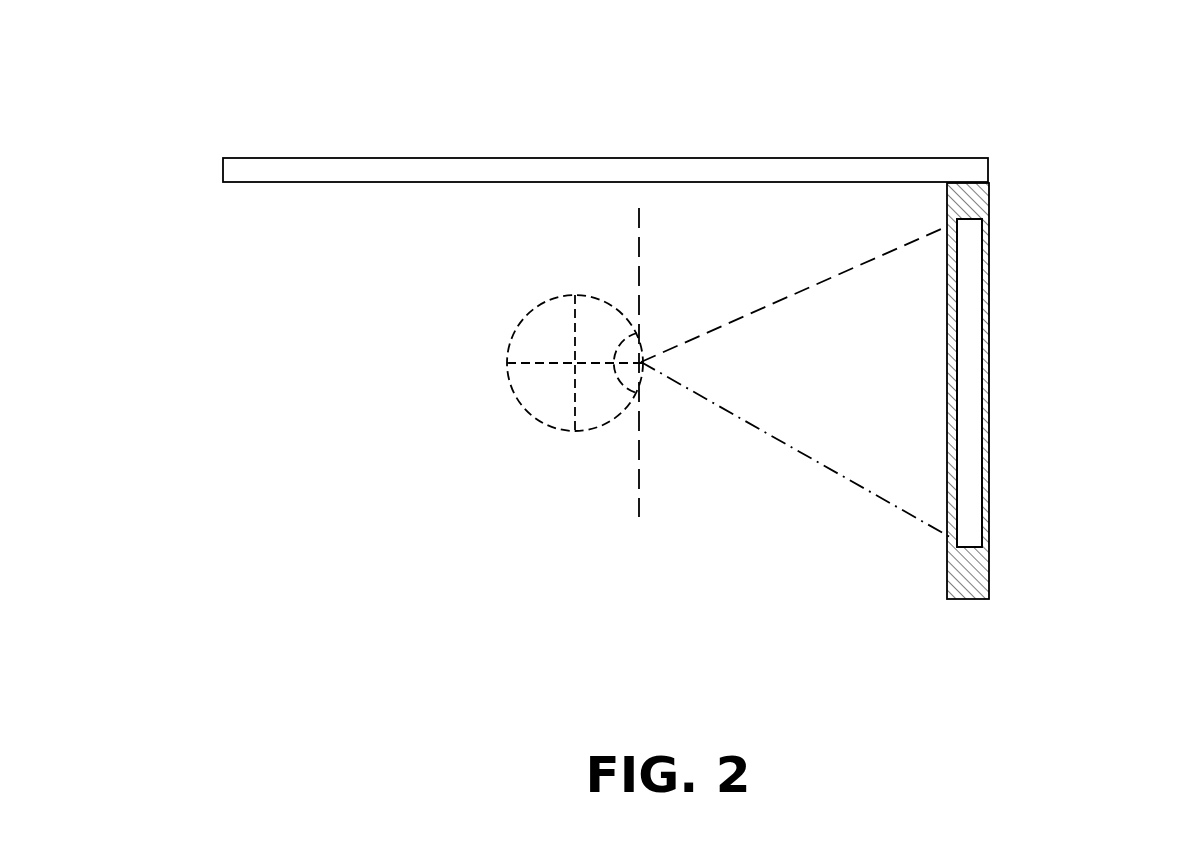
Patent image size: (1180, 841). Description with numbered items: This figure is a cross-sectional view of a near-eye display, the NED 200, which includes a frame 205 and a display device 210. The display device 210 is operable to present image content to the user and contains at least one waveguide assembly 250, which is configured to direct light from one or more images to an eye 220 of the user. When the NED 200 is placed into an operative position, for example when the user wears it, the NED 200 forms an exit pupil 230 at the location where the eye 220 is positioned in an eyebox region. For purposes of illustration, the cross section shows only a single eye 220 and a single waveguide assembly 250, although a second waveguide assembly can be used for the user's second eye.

The near-eye display (NED) 200 is at (354, 130).
The frame 205 is at (838, 158).
The display device 210 is at (989, 478).
The eye 220 is at (536, 310).
The exit pupil 230 is at (645, 370).
The waveguide assembly 250 is at (968, 253).